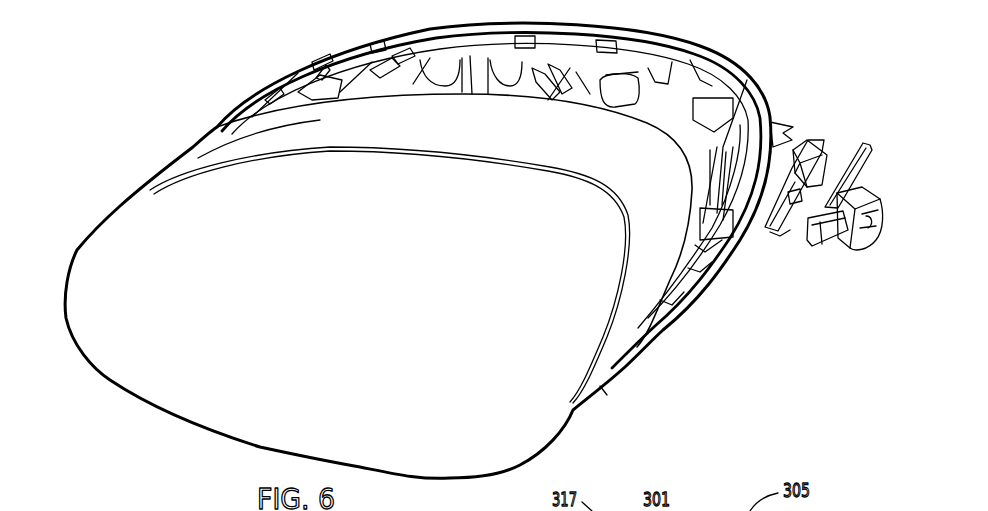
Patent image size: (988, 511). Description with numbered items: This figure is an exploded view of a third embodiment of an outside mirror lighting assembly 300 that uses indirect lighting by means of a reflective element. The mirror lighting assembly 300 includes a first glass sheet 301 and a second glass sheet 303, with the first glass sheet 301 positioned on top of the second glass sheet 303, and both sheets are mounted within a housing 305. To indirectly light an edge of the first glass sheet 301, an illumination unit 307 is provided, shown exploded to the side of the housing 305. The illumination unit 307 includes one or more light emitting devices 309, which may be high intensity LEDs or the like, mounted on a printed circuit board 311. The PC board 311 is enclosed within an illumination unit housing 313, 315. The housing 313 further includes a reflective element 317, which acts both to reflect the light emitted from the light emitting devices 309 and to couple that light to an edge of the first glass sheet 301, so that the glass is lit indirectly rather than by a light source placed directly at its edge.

The mirror lighting assembly 300 is at (104, 66).
The first glass sheet 301 is at (118, 233).
The second glass sheet 303 is at (198, 155).
The housing 305 is at (278, 70).
The illumination unit 307 is at (788, 85).
The light emitting devices 309 is at (797, 227).
The printed circuit board 311 is at (817, 143).
The illumination unit housing 313 is at (867, 197).
The illumination unit housing 315 is at (776, 118).
The reflective element 317 is at (865, 250).